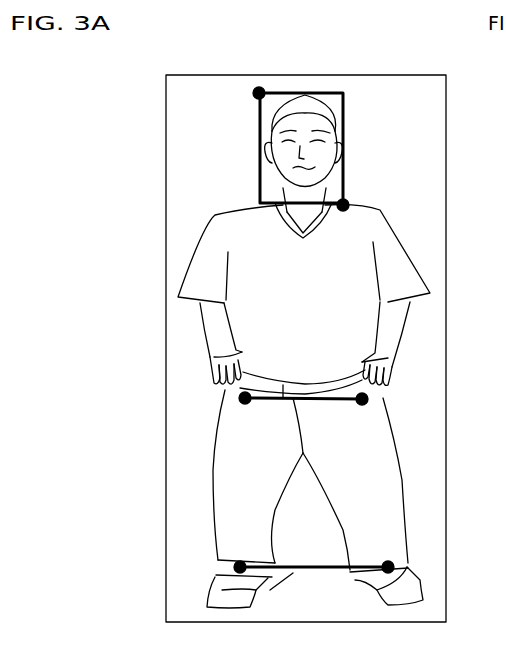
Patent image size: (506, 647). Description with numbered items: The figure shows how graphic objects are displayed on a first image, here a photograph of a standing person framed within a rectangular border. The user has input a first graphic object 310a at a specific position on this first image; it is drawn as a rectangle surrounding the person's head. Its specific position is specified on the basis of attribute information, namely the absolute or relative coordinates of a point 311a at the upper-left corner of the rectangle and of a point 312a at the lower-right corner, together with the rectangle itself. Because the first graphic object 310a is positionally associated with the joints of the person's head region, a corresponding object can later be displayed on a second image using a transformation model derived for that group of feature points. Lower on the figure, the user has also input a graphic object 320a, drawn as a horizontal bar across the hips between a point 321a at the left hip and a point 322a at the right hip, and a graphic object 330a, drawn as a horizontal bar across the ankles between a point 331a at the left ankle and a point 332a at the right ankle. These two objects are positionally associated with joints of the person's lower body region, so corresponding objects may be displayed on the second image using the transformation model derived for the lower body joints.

The first graphic object 310a is at (258, 150).
The point 311a is at (255, 93).
The point 312a is at (348, 205).
The graphic object 320a is at (285, 395).
The left hip point 321a is at (240, 395).
The right hip point 322a is at (368, 399).
The graphic object 330a is at (270, 588).
The left ankle point 331a is at (236, 567).
The right ankle point 332a is at (394, 566).